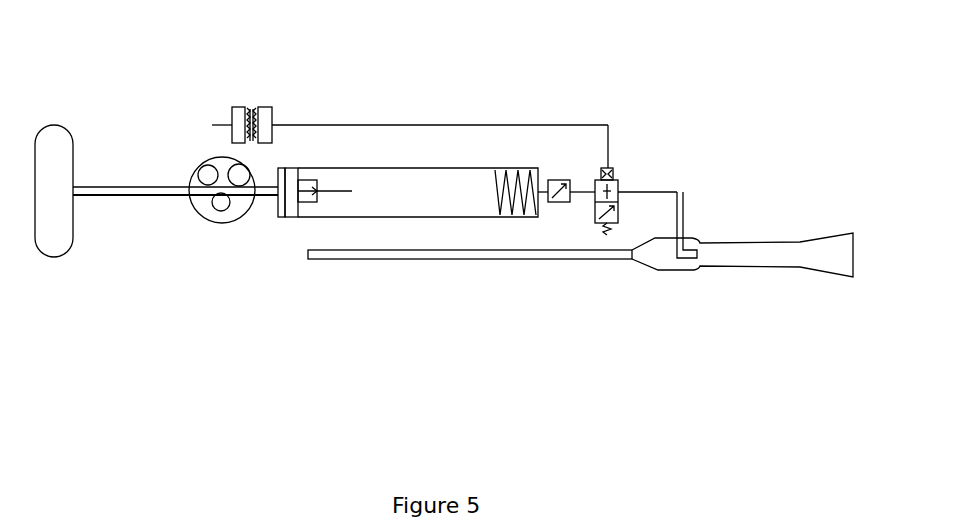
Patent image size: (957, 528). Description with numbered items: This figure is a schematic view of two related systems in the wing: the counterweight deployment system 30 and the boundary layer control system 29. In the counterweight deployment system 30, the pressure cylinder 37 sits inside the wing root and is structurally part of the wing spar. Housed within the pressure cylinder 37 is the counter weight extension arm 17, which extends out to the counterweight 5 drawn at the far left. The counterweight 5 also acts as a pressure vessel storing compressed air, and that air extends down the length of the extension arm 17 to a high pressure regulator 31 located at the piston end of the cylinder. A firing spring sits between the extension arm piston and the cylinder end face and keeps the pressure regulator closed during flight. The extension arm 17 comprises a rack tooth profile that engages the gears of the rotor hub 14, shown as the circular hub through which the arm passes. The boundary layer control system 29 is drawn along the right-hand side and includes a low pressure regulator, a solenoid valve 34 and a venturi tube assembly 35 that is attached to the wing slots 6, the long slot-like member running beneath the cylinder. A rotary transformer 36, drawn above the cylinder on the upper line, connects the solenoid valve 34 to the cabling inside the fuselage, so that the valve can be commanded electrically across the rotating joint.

The counterweight 5 is at (53, 150).
The counter weight extension arm 17 is at (117, 196).
The rotor hub 14 is at (240, 222).
The rotary transformer 36 is at (270, 117).
The counterweight deployment system 30 is at (462, 95).
The pressure cylinder 37 is at (440, 176).
The high pressure regulator 31 is at (305, 215).
The solenoid valve 34 is at (622, 183).
The venturi tube assembly 35 is at (697, 237).
The wing slots 6 is at (495, 262).
The boundary layer control system 29 is at (570, 285).